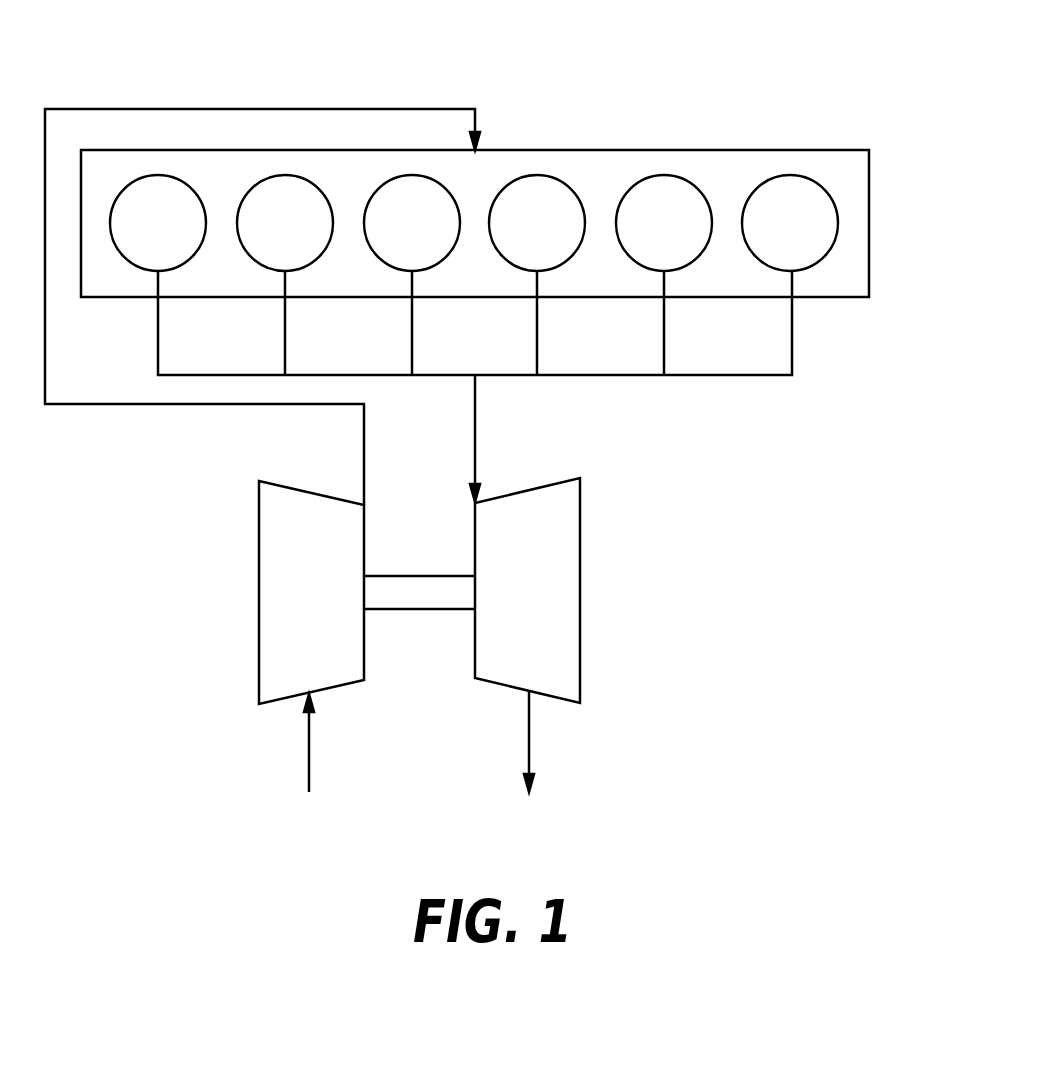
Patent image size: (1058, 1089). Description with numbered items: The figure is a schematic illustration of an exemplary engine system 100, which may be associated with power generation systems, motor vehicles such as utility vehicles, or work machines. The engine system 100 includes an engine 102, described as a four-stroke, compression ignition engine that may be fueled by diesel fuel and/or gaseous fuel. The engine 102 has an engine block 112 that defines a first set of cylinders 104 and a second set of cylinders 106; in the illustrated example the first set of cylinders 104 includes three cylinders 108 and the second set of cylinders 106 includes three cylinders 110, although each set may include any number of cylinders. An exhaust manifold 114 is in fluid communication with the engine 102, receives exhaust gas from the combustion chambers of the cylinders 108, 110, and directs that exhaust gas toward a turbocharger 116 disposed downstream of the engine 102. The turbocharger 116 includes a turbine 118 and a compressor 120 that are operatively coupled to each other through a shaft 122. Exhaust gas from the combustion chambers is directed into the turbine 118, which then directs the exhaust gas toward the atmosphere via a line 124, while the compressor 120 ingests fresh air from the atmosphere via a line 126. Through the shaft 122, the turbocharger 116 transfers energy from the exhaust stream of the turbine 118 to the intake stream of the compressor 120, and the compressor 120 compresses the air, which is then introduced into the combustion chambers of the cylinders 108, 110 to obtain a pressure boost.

The engine system 100 is at (818, 52).
The engine 102 is at (524, 170).
The first set of cylinders 104 is at (285, 157).
The second set of cylinders 106 is at (663, 157).
The cylinders 108 is at (158, 175).
The cylinders 110 is at (537, 175).
The engine block 112 is at (869, 268).
The exhaust manifold 114 is at (688, 403).
The turbocharger 116 is at (441, 599).
The turbine 118 is at (580, 643).
The compressor 120 is at (259, 592).
The shaft 122 is at (420, 611).
The line 124 is at (552, 742).
The line 126 is at (286, 743).